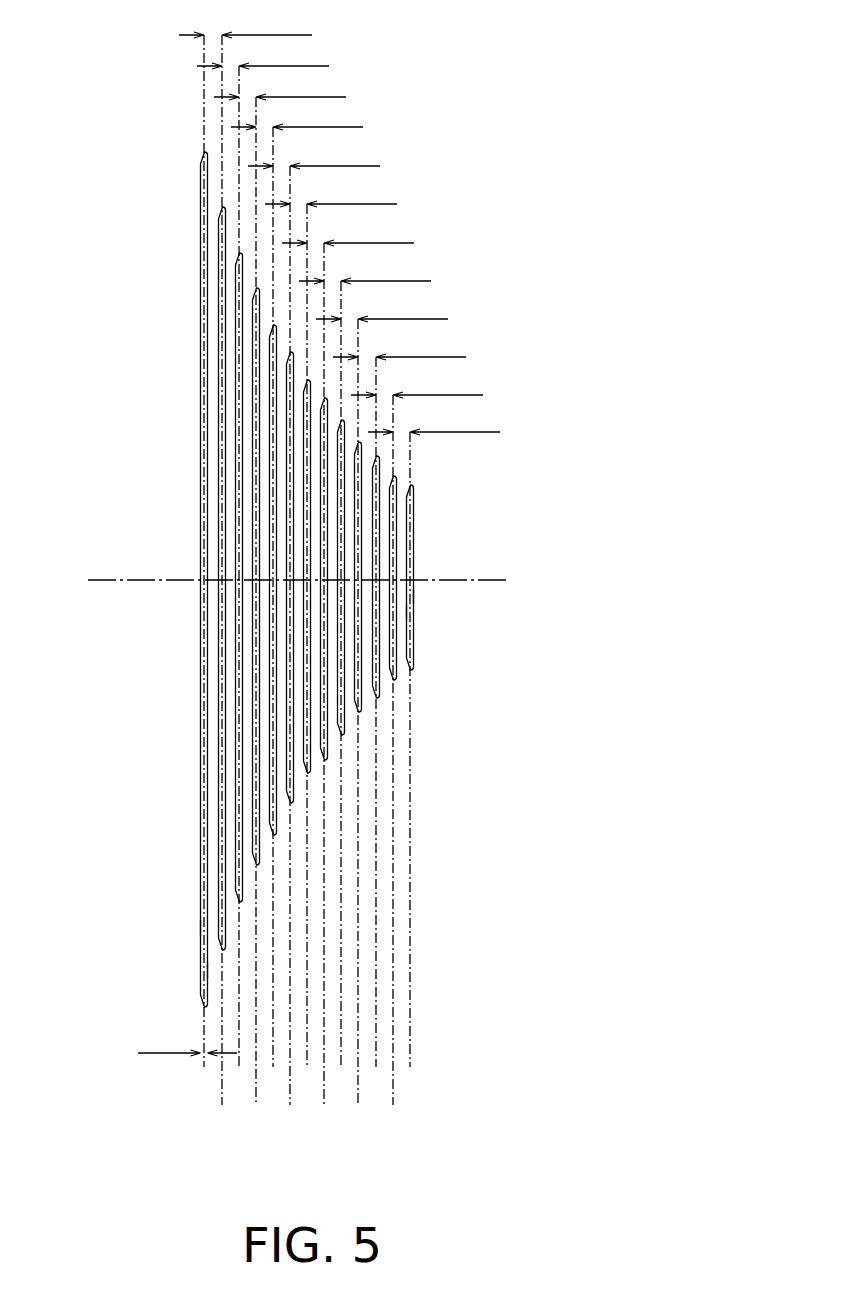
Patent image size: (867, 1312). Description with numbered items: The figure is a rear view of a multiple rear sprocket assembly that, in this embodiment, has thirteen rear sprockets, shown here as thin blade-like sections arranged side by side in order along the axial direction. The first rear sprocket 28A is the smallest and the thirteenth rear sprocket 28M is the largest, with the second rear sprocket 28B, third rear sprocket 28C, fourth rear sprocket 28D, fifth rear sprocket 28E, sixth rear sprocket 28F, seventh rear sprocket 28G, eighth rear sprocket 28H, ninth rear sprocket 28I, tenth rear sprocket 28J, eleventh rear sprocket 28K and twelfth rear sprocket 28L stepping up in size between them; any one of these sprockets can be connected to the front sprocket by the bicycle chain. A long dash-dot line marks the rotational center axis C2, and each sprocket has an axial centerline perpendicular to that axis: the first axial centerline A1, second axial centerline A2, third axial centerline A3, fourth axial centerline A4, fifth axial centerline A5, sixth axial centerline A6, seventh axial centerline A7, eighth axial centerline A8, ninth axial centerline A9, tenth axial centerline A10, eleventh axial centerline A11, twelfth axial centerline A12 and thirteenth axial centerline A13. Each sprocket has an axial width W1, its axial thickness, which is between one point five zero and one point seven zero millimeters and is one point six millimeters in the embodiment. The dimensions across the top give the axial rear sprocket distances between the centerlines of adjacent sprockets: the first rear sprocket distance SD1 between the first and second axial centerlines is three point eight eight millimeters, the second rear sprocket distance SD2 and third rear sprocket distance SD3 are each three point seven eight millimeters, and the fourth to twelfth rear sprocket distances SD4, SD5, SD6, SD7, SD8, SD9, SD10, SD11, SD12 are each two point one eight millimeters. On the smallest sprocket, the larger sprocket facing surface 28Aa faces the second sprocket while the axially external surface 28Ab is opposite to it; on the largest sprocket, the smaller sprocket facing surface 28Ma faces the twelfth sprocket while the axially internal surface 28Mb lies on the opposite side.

The first rear sprocket 28A is at (414, 657).
The second rear sprocket 28B is at (396, 665).
The third rear sprocket 28C is at (380, 694).
The fourth rear sprocket 28D is at (362, 708).
The fifth rear sprocket 28E is at (344, 731).
The sixth rear sprocket 28F is at (328, 756).
The seventh rear sprocket 28G is at (310, 769).
The eighth rear sprocket 28H is at (294, 799).
The ninth rear sprocket 28I is at (276, 831).
The tenth rear sprocket 28J is at (260, 861).
The eleventh rear sprocket 28K is at (242, 898).
The twelfth rear sprocket 28L is at (226, 942).
The thirteenth rear sprocket 28M is at (208, 980).
The larger sprocket facing surface 28Aa is at (412, 630).
The axially external surface 28Ab is at (414, 596).
The smaller sprocket facing surface 28Ma is at (198, 961).
The axially internal surface 28Mb is at (200, 928).
The first rear sprocket distance SD1 is at (434, 418).
The second rear sprocket distance SD2 is at (417, 381).
The third rear sprocket distance SD3 is at (399, 343).
The fourth rear sprocket distance SD4 is at (382, 305).
The fifth rear sprocket distance SD5 is at (365, 267).
The sixth rear sprocket distance SD6 is at (348, 229).
The seventh rear sprocket distance SD7 is at (331, 190).
The eighth rear sprocket distance SD8 is at (314, 152).
The ninth rear sprocket distance SD9 is at (297, 113).
The tenth rear sprocket distance SD10 is at (287, 83).
The eleventh rear sprocket distance SD11 is at (270, 52).
The twelfth rear sprocket distance SD12 is at (252, 21).
The first axial centerline A1 is at (410, 764).
The second axial centerline A2 is at (393, 764).
The third axial centerline A3 is at (376, 726).
The fourth axial centerline A4 is at (358, 726).
The fifth axial centerline A5 is at (341, 688).
The sixth axial centerline A6 is at (324, 688).
The seventh axial centerline A7 is at (307, 650).
The eighth axial centerline A8 is at (290, 650).
The ninth axial centerline A9 is at (273, 611).
The tenth axial centerline A10 is at (256, 615).
The eleventh axial centerline A11 is at (239, 581).
The twelfth axial centerline A12 is at (222, 584).
The thirteenth axial centerline A13 is at (204, 565).
The axial width W1 is at (187, 1039).
The rotational center axis C2 is at (302, 582).